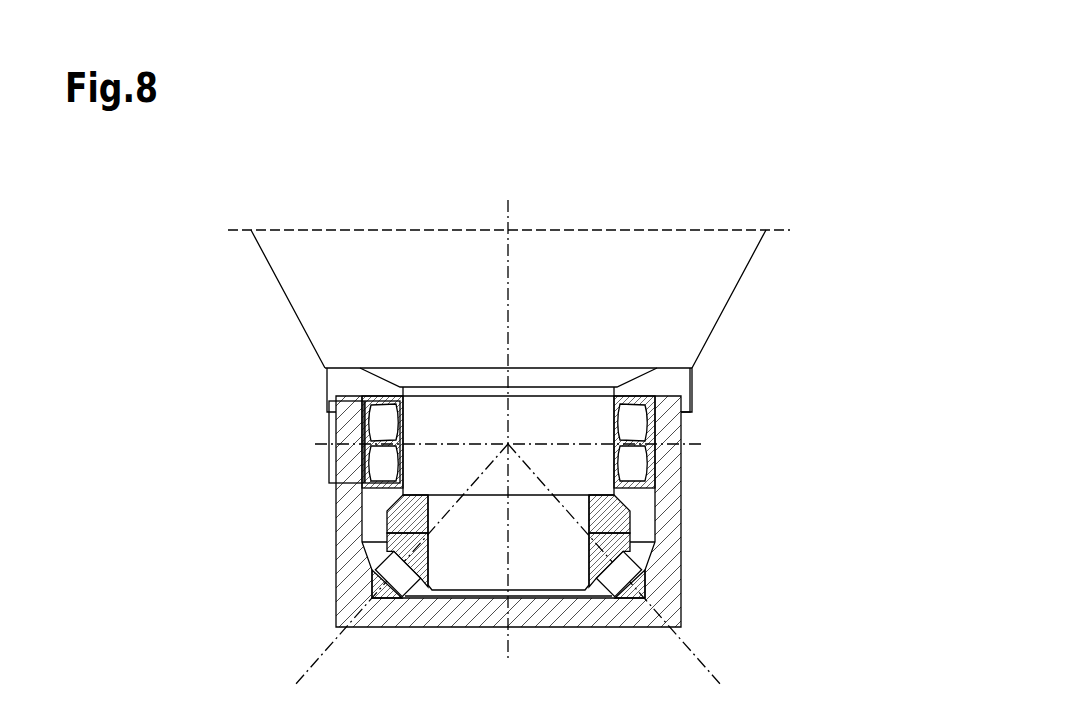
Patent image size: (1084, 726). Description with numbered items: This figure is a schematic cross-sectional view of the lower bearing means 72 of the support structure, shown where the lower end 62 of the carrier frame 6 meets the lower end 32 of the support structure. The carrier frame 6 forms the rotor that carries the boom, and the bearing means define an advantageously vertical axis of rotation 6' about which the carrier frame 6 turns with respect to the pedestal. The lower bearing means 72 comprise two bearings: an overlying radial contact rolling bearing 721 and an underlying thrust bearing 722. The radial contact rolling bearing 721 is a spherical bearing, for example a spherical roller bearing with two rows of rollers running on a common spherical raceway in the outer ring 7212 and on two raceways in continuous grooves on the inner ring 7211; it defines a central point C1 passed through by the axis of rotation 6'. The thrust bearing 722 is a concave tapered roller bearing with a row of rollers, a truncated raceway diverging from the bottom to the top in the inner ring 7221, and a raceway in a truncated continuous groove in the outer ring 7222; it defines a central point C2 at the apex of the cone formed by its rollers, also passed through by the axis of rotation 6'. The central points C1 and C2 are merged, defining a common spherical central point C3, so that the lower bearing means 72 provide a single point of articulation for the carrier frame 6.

The carrier frame 6 is at (509, 264).
The lower end 62 is at (509, 264).
The lower end 32 is at (393, 262).
The axis of rotation 6' is at (543, 422).
The central point C1 is at (508, 501).
The central point C2 is at (508, 501).
The spherical central point C3 is at (514, 440).
The lower bearing means 72 is at (607, 439).
The radial contact rolling bearing 721 is at (607, 439).
The outer ring 7212 is at (607, 439).
The inner ring 7211 is at (631, 428).
The thrust bearing 722 is at (569, 599).
The inner ring 7221 is at (594, 559).
The outer ring 7222 is at (629, 597).